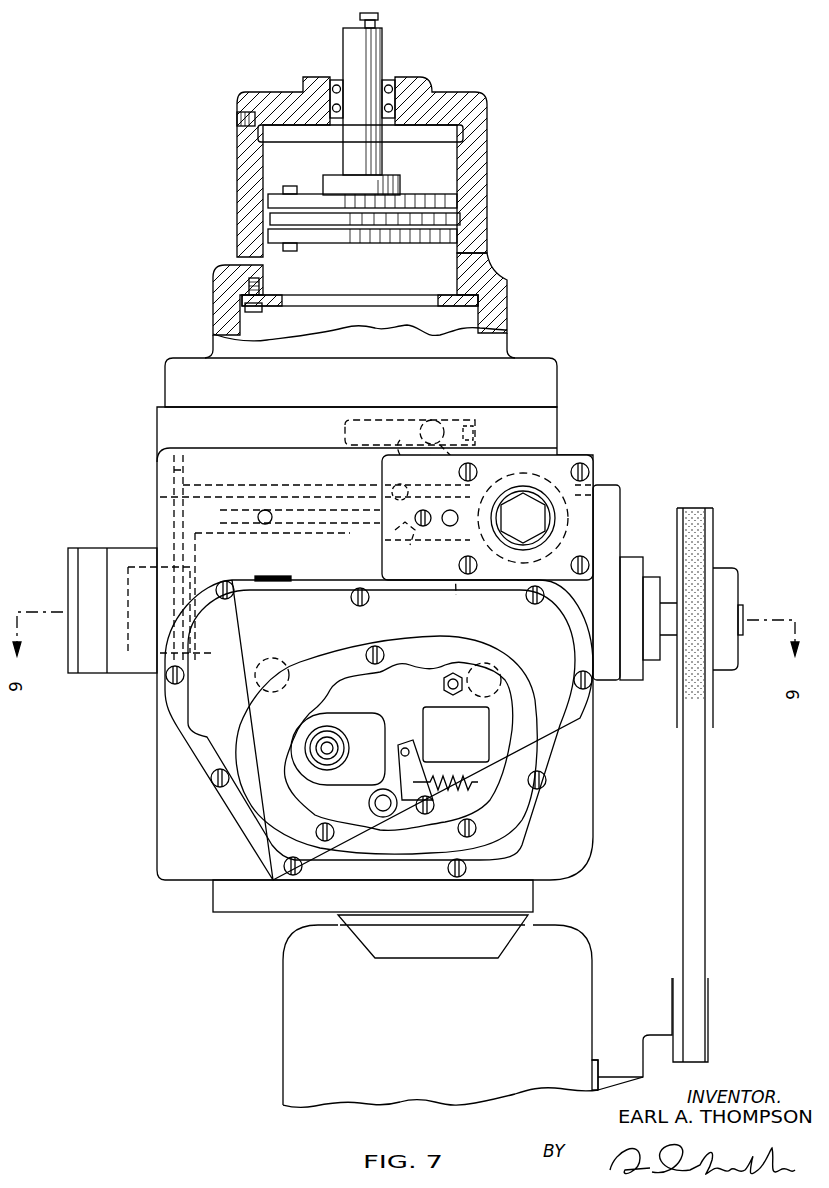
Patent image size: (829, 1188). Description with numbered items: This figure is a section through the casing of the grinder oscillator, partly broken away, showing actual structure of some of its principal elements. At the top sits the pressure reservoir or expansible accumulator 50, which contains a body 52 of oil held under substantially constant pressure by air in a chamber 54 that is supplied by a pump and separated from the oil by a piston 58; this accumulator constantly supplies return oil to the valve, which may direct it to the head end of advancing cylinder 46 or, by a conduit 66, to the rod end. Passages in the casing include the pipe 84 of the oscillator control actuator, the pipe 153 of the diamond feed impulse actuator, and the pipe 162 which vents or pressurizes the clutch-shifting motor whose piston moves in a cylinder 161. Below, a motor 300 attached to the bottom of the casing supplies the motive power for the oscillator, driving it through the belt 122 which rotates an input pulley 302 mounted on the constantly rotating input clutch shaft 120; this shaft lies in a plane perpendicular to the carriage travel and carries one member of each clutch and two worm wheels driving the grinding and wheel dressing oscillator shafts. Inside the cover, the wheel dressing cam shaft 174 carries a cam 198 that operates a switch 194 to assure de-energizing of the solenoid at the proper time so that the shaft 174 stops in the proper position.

The pressure reservoir or expansible accumulator 50 is at (490, 240).
The body of oil 52 is at (288, 272).
The air chamber 54 is at (285, 172).
The piston 58 is at (270, 217).
The head end of advancing cylinder 46 is at (560, 457).
The conduit 66 is at (483, 437).
The pipe 84 is at (448, 535).
The input clutch shaft 120 is at (670, 625).
The belt 122 is at (695, 826).
The pipe 153 is at (290, 525).
The cylinder 161 is at (145, 565).
The pipe 162 is at (212, 485).
The wheel dressing cam shaft 174 is at (318, 748).
The switch 194 is at (440, 720).
The cam 198 is at (350, 720).
The motor 300 is at (555, 945).
The input pulley 302 is at (720, 585).